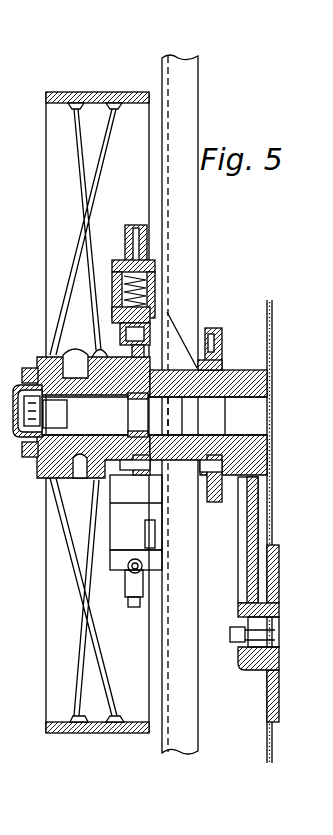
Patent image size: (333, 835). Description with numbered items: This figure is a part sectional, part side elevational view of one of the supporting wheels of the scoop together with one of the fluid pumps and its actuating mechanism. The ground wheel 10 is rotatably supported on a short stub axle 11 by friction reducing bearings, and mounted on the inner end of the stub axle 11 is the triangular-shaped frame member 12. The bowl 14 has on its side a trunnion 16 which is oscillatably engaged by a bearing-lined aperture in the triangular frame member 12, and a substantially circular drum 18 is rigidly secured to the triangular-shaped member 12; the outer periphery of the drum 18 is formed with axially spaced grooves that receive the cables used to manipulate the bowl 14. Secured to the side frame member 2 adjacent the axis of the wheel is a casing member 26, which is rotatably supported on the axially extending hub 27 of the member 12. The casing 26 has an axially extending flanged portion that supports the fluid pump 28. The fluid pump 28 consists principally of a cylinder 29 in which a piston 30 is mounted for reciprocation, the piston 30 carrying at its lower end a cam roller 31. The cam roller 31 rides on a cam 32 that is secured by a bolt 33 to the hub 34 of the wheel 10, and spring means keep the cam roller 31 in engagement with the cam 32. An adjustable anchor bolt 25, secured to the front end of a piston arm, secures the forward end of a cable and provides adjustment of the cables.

The side frame member 2 is at (195, 683).
The ground wheel 10 is at (133, 692).
The stub axle 11 is at (246, 408).
The triangular-shaped frame member 12 is at (248, 577).
The bowl 14 is at (271, 508).
The trunnion 16 is at (273, 618).
The drum 18 is at (215, 503).
The adjustable anchor bolt 25 is at (150, 265).
The casing member 26 is at (167, 352).
The axially extending hub 27 is at (170, 390).
The fluid pump 28 is at (120, 510).
The cylinder 29 is at (153, 290).
The piston 30 is at (150, 308).
The cam roller 31 is at (125, 333).
The cam 32 is at (84, 368).
The bolt 33 is at (150, 452).
The hub 34 is at (87, 466).